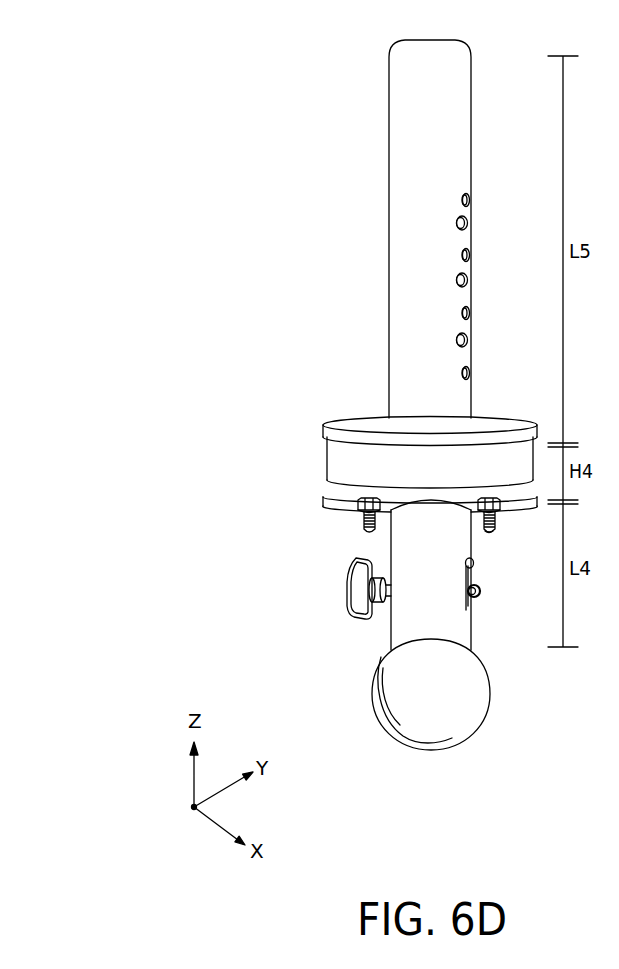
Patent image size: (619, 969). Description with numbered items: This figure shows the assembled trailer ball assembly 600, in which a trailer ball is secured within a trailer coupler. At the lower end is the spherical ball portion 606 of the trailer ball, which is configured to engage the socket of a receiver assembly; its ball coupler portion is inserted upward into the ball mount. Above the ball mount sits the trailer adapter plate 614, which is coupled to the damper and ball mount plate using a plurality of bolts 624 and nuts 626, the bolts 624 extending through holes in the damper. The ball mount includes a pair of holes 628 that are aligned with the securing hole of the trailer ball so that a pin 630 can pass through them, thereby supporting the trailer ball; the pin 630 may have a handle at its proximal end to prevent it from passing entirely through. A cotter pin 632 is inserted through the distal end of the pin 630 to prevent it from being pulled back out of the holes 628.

The trailer ball assembly 600 is at (279, 94).
The trailer adapter plate 614 is at (390, 423).
The nuts 626 is at (358, 510).
The bolts 624 is at (489, 533).
The cotter pin 632 is at (478, 577).
The holes 628 is at (479, 595).
The pin 630 is at (355, 619).
The spherical ball portion 606 is at (482, 716).